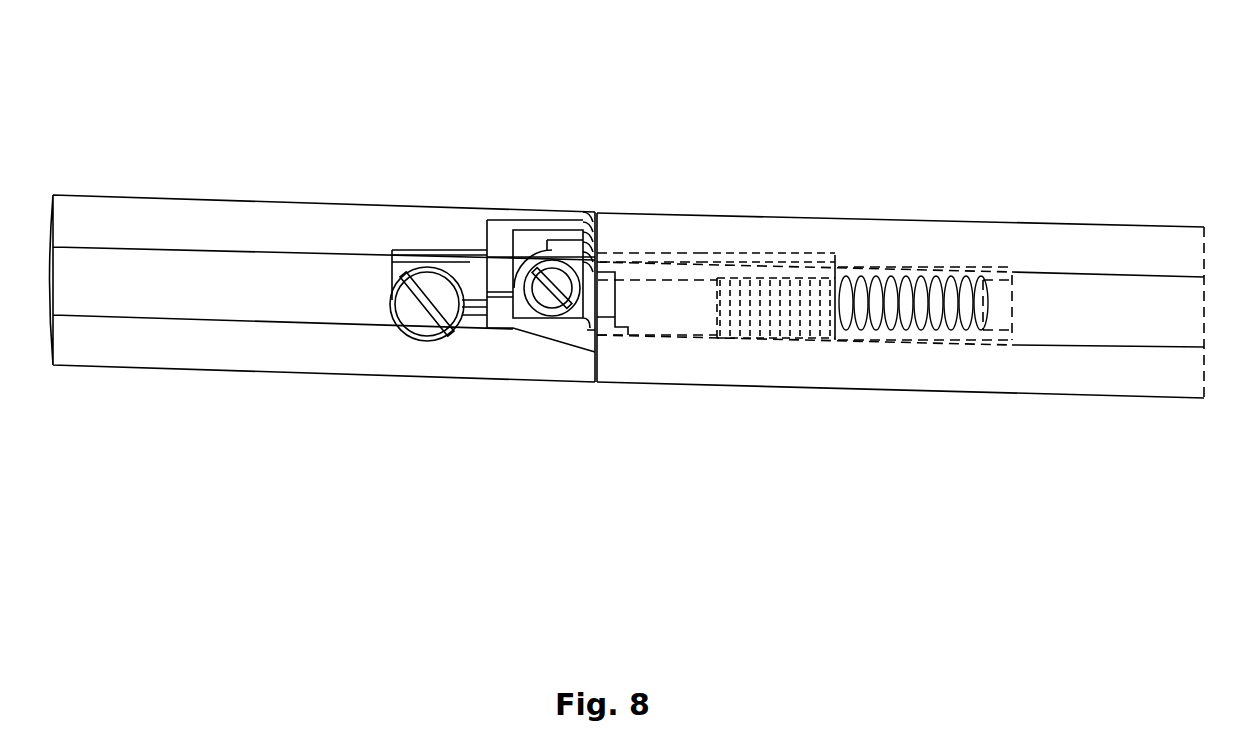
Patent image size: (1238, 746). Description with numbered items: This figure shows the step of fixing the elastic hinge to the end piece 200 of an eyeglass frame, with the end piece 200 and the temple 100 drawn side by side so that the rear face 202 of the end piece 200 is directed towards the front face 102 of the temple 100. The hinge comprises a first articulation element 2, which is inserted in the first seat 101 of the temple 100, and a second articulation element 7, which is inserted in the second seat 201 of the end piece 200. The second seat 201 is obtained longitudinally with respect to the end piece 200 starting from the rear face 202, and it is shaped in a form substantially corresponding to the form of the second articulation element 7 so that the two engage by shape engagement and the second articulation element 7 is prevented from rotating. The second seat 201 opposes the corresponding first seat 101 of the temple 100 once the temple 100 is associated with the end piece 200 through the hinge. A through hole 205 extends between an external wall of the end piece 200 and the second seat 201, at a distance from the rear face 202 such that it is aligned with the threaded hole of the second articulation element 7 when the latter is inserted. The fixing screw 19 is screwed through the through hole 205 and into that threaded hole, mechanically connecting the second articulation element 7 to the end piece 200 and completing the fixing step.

The end piece 200 is at (115, 215).
The temple 100 is at (1138, 245).
The first articulation element 2 is at (787, 168).
The second articulation element 7 is at (518, 173).
The through hole 205 is at (420, 267).
The fixing screw 19 is at (412, 327).
The second seat 201 is at (482, 337).
The front face 102 is at (592, 353).
The rear face 202 is at (599, 353).
The first seat 101 is at (1021, 340).